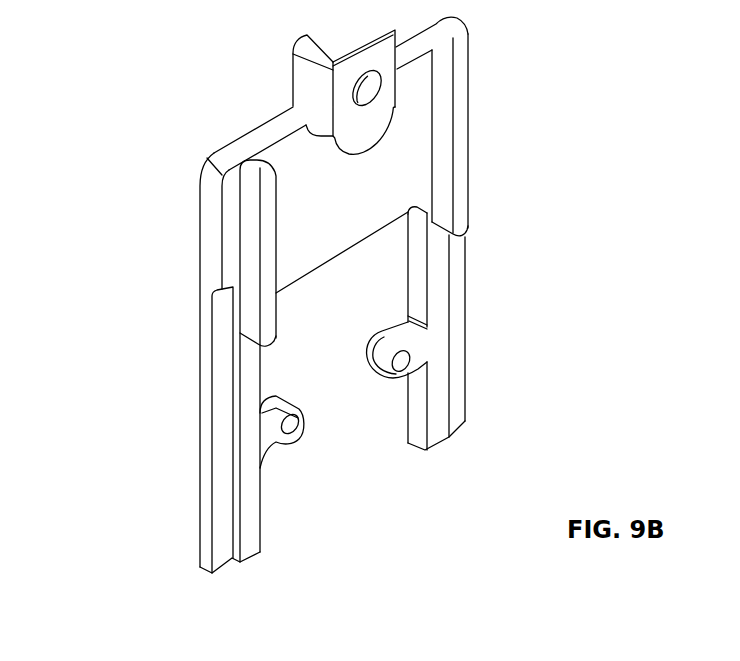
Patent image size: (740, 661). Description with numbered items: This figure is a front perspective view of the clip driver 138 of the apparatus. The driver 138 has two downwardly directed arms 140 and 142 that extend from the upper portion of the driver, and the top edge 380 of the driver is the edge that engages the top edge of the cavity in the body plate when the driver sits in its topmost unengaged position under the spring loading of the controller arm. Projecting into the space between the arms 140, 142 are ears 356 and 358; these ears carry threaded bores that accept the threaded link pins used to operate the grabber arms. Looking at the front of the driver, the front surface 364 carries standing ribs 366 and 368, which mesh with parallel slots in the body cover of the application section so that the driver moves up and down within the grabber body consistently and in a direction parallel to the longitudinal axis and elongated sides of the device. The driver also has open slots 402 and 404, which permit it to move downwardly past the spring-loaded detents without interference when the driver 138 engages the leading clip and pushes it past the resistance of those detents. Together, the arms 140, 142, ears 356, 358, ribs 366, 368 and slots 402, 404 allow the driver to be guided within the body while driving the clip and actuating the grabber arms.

The driver 138 is at (128, 57).
The arm 140 is at (199, 496).
The arm 142 is at (462, 387).
The ear 356 is at (268, 444).
The ear 358 is at (424, 357).
The front surface 364 is at (372, 198).
The standing rib 366 is at (266, 238).
The standing rib 368 is at (460, 132).
The top edge 380 is at (252, 141).
The open slot 402 is at (220, 368).
The open slot 404 is at (467, 258).